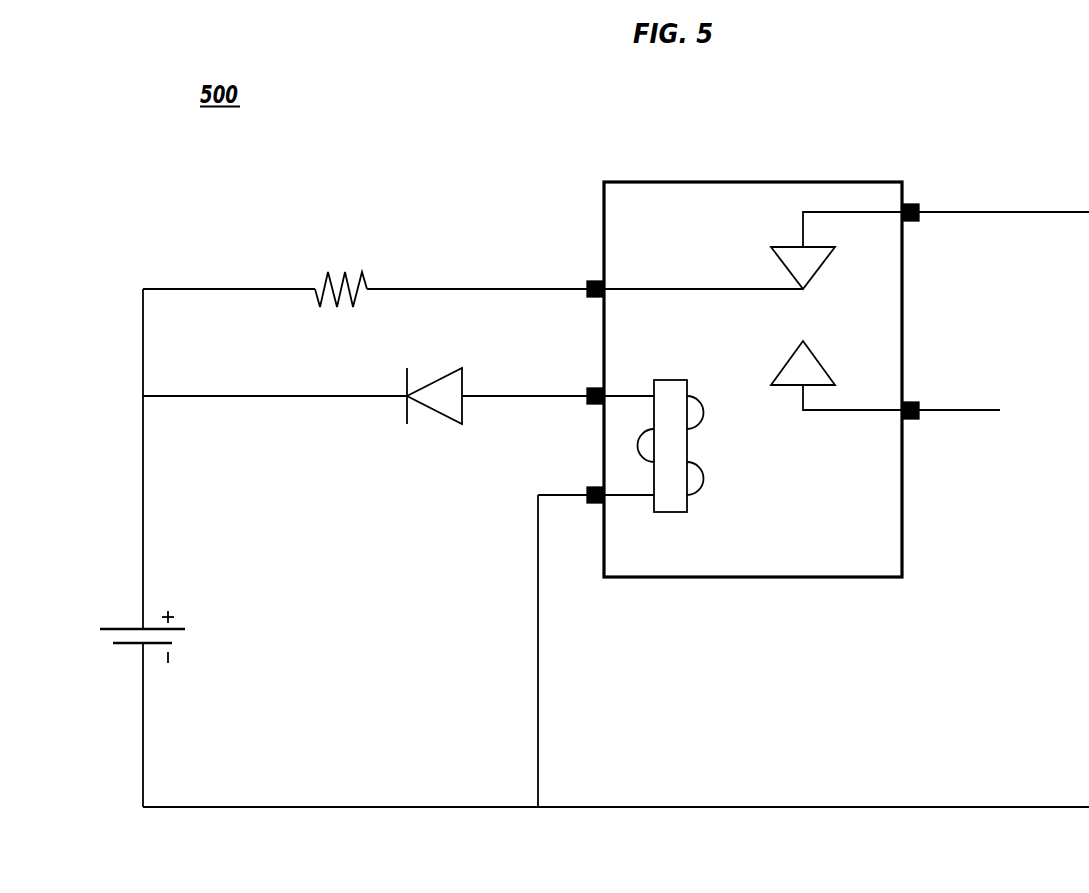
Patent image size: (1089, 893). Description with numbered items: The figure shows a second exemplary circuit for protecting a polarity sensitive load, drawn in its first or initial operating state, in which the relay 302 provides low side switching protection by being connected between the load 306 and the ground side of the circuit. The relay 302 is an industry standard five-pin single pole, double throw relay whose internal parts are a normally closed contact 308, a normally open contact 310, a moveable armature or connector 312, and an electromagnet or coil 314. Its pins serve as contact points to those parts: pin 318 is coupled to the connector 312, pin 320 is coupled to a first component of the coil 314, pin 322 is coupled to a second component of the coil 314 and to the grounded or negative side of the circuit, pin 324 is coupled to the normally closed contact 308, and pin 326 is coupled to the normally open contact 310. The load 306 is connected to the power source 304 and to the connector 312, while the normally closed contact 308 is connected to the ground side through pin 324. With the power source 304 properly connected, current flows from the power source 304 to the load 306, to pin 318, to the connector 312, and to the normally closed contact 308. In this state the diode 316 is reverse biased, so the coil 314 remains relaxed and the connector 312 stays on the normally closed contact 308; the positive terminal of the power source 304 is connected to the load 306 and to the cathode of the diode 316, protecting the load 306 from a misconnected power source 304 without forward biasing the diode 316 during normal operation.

The relay 302 is at (727, 167).
The power source 304 is at (120, 605).
The load 306 is at (352, 261).
The normally closed contact 308 is at (818, 267).
The normally open contact 310 is at (828, 373).
The connector 312 is at (655, 288).
The coil 314 is at (688, 442).
The diode 316 is at (440, 367).
The pin 318 is at (583, 275).
The pin 320 is at (583, 380).
The pin 322 is at (583, 480).
The pin 324 is at (925, 199).
The pin 326 is at (913, 397).